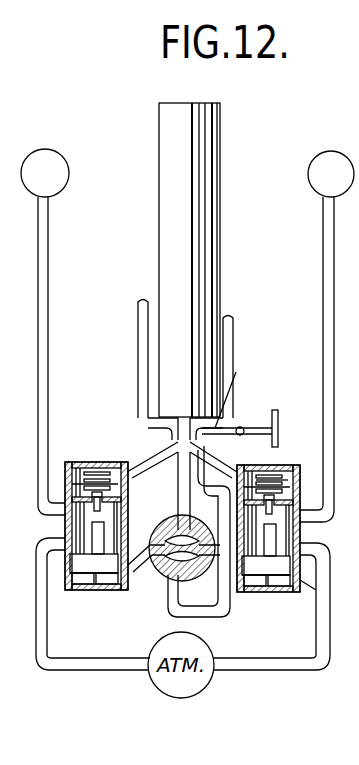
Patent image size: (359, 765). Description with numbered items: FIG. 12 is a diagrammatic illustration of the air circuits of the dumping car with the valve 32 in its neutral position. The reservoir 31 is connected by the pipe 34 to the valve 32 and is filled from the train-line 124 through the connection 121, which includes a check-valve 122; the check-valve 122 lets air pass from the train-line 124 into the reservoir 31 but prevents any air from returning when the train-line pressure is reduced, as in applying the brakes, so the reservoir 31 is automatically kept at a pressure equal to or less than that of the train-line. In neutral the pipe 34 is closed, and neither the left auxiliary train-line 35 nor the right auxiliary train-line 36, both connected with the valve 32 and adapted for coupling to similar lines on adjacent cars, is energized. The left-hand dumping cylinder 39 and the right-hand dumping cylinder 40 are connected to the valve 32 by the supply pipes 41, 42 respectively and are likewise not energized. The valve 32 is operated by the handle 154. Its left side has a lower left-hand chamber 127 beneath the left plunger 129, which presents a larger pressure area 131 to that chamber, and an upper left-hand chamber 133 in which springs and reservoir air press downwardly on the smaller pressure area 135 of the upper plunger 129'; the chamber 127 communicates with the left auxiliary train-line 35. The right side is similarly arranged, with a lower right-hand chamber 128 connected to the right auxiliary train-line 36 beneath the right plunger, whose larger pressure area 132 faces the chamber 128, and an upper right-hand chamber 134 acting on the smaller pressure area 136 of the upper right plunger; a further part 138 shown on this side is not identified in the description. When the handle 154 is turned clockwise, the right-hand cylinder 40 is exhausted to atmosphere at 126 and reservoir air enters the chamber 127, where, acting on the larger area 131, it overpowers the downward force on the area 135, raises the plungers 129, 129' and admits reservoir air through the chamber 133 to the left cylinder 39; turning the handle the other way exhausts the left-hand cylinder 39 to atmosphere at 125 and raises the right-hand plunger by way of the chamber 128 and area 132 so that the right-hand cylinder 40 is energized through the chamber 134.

The reservoir 31 is at (189, 260).
The valve 32 is at (167, 570).
The pipe from reservoir to valve 34 is at (150, 420).
The left auxiliary train-line pipe 35 is at (140, 335).
The right auxiliary train-line pipe 36 is at (233, 335).
The left-hand dumping cylinder 39 is at (45, 173).
The right-hand dumping cylinder 40 is at (331, 174).
The supply pipe 41 is at (38, 352).
The supply pipe 42 is at (323, 313).
The connection 121 is at (244, 390).
The check-valve 122 is at (242, 428).
The train-line 124 is at (278, 414).
The atmosphere exhaust 125 is at (40, 631).
The atmosphere exhaust 126 is at (316, 627).
The left-hand chamber 127 is at (70, 592).
The right-hand chamber 128 is at (318, 600).
The left plunger 129 is at (299, 543).
The upper plunger 129' is at (59, 537).
The larger pressure area 131 is at (100, 592).
The larger pressure area 132 is at (258, 593).
The upper left-hand chamber 133 is at (112, 456).
The upper right-hand chamber 134 is at (277, 466).
The upper pressure area 135 is at (66, 490).
The upper pressure area 136 is at (254, 469).
The valve disc 138 is at (296, 481).
The handle 154 is at (176, 506).